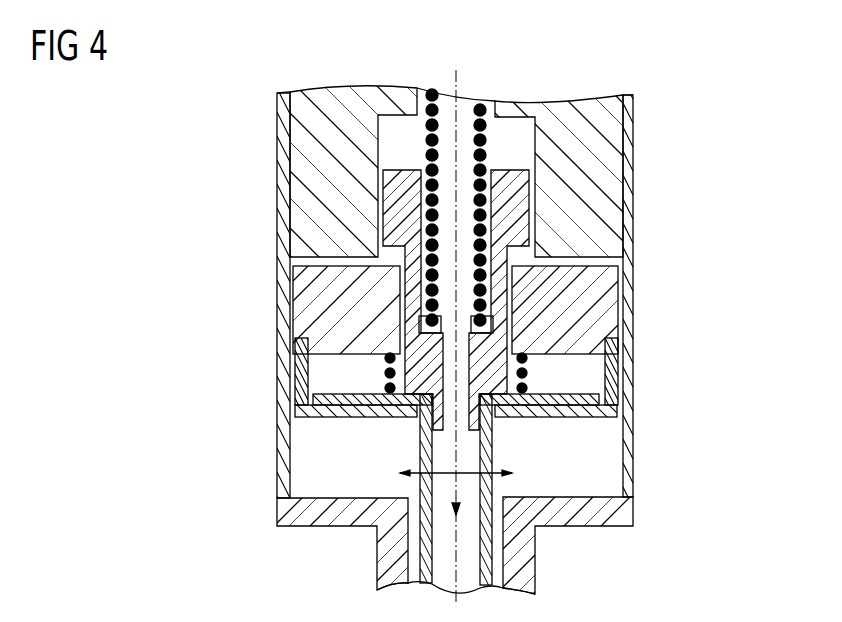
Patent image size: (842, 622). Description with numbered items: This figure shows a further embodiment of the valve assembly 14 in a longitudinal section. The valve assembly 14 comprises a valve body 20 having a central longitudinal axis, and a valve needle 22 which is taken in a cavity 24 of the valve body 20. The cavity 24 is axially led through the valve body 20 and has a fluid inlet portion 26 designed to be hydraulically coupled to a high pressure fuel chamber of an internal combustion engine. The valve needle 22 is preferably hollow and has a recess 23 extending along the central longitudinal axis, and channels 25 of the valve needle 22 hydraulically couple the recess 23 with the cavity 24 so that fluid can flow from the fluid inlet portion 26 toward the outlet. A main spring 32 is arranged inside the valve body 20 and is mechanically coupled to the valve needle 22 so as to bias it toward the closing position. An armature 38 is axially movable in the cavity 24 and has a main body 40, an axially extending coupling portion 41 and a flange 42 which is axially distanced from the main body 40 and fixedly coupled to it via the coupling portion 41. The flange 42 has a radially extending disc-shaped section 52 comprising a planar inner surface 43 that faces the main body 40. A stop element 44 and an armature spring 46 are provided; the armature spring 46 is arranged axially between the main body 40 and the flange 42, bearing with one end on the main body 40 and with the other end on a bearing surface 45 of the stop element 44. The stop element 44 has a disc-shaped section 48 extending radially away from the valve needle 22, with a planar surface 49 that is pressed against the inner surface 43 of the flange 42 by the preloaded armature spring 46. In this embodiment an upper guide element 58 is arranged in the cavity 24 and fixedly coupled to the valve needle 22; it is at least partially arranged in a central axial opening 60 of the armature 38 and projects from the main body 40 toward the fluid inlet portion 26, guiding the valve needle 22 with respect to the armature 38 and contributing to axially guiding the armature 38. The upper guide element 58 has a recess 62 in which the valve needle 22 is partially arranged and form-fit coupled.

The valve assembly 14 is at (212, 130).
The valve body 20 is at (325, 216).
The valve needle 22 is at (467, 577).
The recess 23 is at (460, 547).
The cavity 24 is at (628, 445).
The channels 25 is at (407, 462).
The fluid inlet portion 26 is at (468, 95).
The main spring 32 is at (485, 142).
The armature 38 is at (595, 316).
The main body 40 is at (325, 317).
The coupling portion 41 is at (296, 357).
The flange 42 is at (318, 408).
The inner surface 43 is at (577, 412).
The stop element 44 is at (348, 394).
The bearing surface 45 is at (573, 400).
The armature spring 46 is at (385, 370).
The disc-shaped section 48 is at (580, 477).
The planar surface 49 is at (343, 453).
The disc-shaped section 52 is at (565, 372).
The upper guide element 58 is at (513, 203).
The central axial opening 60 is at (402, 293).
The recess 62 is at (493, 299).